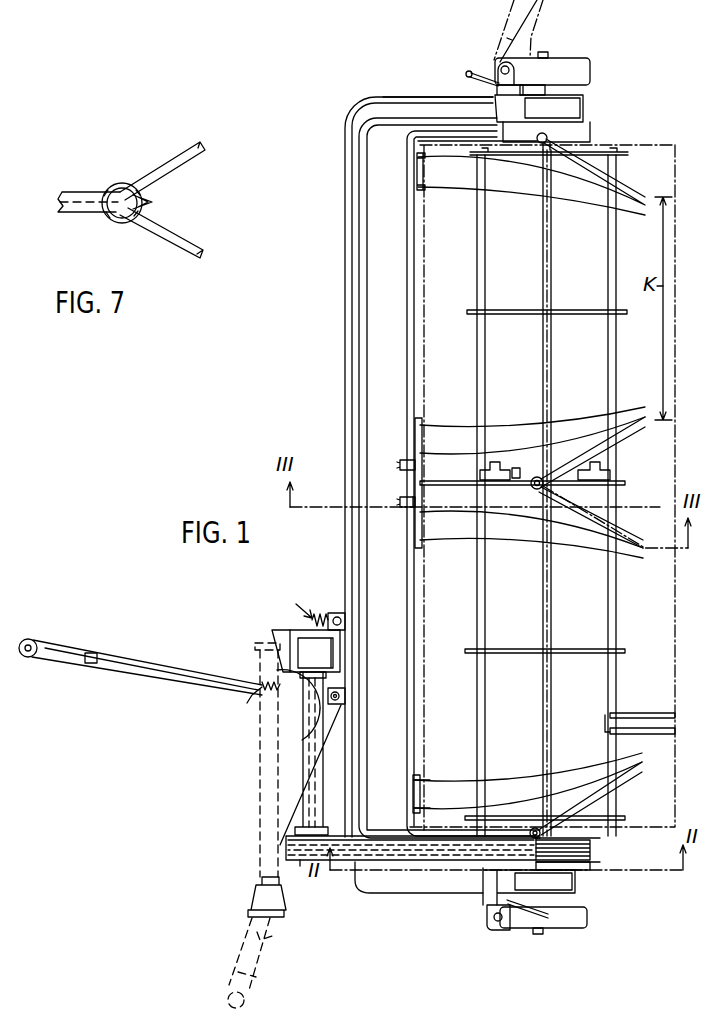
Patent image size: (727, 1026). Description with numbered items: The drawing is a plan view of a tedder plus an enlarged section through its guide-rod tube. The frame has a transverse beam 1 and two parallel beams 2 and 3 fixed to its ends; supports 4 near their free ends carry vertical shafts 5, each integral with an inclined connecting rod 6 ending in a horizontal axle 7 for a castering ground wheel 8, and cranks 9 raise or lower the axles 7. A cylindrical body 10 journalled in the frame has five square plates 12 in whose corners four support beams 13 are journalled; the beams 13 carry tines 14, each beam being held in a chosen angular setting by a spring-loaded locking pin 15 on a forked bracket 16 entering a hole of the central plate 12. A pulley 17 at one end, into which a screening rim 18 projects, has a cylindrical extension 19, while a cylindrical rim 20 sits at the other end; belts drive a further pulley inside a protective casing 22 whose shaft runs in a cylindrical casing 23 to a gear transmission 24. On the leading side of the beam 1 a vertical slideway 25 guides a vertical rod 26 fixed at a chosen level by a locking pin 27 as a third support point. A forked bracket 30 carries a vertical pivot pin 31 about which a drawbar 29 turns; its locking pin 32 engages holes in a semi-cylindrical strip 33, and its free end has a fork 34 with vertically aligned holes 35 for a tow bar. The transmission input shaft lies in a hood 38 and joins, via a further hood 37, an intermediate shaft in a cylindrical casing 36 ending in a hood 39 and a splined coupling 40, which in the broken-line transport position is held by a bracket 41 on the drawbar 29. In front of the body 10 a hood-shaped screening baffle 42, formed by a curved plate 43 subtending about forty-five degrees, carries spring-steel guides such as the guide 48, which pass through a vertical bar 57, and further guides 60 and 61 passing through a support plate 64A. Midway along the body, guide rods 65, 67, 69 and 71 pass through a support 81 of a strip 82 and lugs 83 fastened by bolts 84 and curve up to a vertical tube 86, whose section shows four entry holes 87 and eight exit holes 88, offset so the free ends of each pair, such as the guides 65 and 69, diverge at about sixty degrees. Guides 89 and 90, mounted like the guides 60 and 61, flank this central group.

In FIG. 1, the beam 1 is at (346, 294).
In FIG. 1, the beam 2 is at (388, 893).
In FIG. 1, the beam 3 is at (382, 100).
In FIG. 1, the support 4 is at (493, 105).
In FIG. 1, the shaft 5 is at (497, 66).
In FIG. 1, the connecting rod 6 is at (546, 90).
In FIG. 1, the axle 7 is at (546, 54).
In FIG. 1, the ground wheel 8 is at (585, 68).
In FIG. 1, the crank 9 is at (466, 73).
In FIG. 1, the cylindrical body 10 is at (632, 140).
In FIG. 1, the square plate 12 is at (594, 310).
In FIG. 1, the support beam 13 is at (614, 692).
In FIG. 1, the tine 14 is at (650, 713).
In FIG. 1, the locking pin 15 is at (524, 466).
In FIG. 1, the forked bracket 16 is at (610, 470).
In FIG. 1, the pulley 17 is at (592, 850).
In FIG. 1, the screening rim 18 is at (596, 838).
In FIG. 1, the cylindrical extension 19 is at (592, 866).
In FIG. 1, the cylindrical rim 20 is at (590, 135).
In FIG. 1, the protective casing 22 is at (300, 862).
In FIG. 1, the cylindrical casing 23 is at (313, 760).
In FIG. 1, the gear transmission 24 is at (300, 636).
In FIG. 1, the vertical slideway 25 is at (318, 614).
In FIG. 1, the vertical rod 26 is at (337, 614).
In FIG. 1, the locking pin 27 is at (298, 604).
In FIG. 1, the drawbar 29 is at (160, 664).
In FIG. 1, the forked bracket 30 is at (345, 694).
In FIG. 1, the pivot pin 31 is at (345, 700).
In FIG. 1, the locking pin 32 is at (254, 698).
In FIG. 1, the semi-cylindrical strip 33 is at (283, 730).
In FIG. 1, the fork 34 is at (44, 632).
In FIG. 1, the holes 35 is at (30, 657).
In FIG. 1, the cylindrical casing 36 is at (258, 806).
In FIG. 1, the hood 37 is at (262, 654).
In FIG. 1, the hood 38 is at (272, 640).
In FIG. 1, the hood 39 is at (250, 905).
In FIG. 1, the coupling 40 is at (266, 926).
In FIG. 1, the bracket 41 is at (93, 665).
In FIG. 1, the screening baffle 42 is at (354, 208).
In FIG. 1, the curved plate 43 is at (408, 250).
In FIG. 1, the guide rod element 48 is at (480, 842).
In FIG. 1, the vertical bar 57 is at (542, 833).
In FIG. 1, the guide 60 is at (520, 802).
In FIG. 1, the guide 61 is at (528, 770).
In FIG. 1, the support plate 64A is at (420, 803).
In FIG. 1, the guide rod 65 is at (628, 536).
In FIG. 7, the guide rod 67 is at (207, 252).
In FIG. 1, the guide rod 69 is at (640, 432).
In FIG. 7, the guide rod 71 is at (207, 150).
In FIG. 1, the support 81 is at (403, 453).
In FIG. 1, the strip 82 is at (410, 478).
In FIG. 1, the lugs 83 is at (406, 514).
In FIG. 1, the bolts 84 is at (400, 508).
In FIG. 7, the tube 86 is at (125, 183).
In FIG. 1, the tube 86 is at (535, 478).
In FIG. 7, the entry holes 87 is at (95, 190).
In FIG. 7, the exit holes 88 is at (152, 202).
In FIG. 1, the guide 89 is at (465, 422).
In FIG. 1, the guide 90 is at (462, 456).